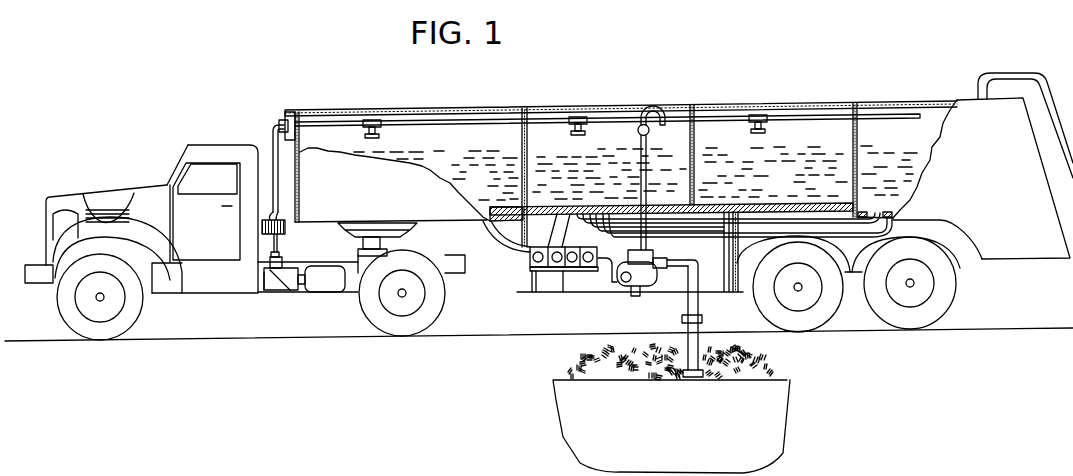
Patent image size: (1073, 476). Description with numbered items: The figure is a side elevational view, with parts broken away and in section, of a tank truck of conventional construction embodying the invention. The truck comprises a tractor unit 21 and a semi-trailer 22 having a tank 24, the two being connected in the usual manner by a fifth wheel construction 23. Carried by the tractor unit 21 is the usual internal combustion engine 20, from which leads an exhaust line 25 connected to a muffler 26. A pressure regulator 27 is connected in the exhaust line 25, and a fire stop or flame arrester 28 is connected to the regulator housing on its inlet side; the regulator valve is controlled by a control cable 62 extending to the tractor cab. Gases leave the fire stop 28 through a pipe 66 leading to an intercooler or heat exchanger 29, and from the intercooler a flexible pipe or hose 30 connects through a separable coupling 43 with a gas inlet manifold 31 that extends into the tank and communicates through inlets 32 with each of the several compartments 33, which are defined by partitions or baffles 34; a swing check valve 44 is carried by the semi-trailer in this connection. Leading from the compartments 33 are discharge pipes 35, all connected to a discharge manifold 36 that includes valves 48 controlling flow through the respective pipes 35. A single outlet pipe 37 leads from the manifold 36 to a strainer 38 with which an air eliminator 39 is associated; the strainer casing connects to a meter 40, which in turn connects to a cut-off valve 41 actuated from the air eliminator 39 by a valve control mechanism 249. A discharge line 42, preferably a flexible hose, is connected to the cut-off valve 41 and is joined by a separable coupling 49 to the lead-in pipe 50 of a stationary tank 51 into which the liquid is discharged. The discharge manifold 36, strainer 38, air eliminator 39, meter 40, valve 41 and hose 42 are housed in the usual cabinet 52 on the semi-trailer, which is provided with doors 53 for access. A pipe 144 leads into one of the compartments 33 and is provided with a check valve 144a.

The internal combustion engine 20 is at (103, 208).
The tractor unit 21 is at (163, 177).
The semi-trailer 22 is at (621, 138).
The fifth wheel construction 23 is at (408, 236).
The tank 24 is at (470, 108).
The exhaust line 25 is at (280, 291).
The muffler 26 is at (340, 292).
The pressure regulator 27 is at (288, 283).
The fire stop 28 is at (270, 273).
The intercooler 29 is at (287, 226).
The flexible pipe 30 is at (273, 142).
The gas inlet manifold 31 is at (348, 120).
The inlets 32 is at (382, 120).
The compartments 33 is at (446, 150).
The partitions 34 is at (520, 137).
The discharge pipes 35 is at (514, 240).
The discharge manifold 36 is at (548, 272).
The outlet pipe 37 is at (609, 270).
The strainer 38 is at (626, 283).
The air eliminator 39 is at (653, 253).
The meter 40 is at (643, 284).
The cut-off valve 41 is at (669, 268).
The discharge line 42 is at (699, 300).
The separable coupling 43 is at (284, 120).
The swing check valve 44 is at (293, 118).
The valves 48 is at (530, 268).
The separable coupling 49 is at (702, 320).
The lead-in pipe 50 is at (732, 354).
The stationary tank 51 is at (784, 405).
The cabinet 52 is at (564, 288).
The doors 53 is at (748, 232).
The control cable 62 is at (270, 280).
The pipe 66 is at (282, 248).
The pipe 144 is at (640, 163).
The check valve 144a is at (617, 136).
The valve control mechanism 249 is at (637, 297).